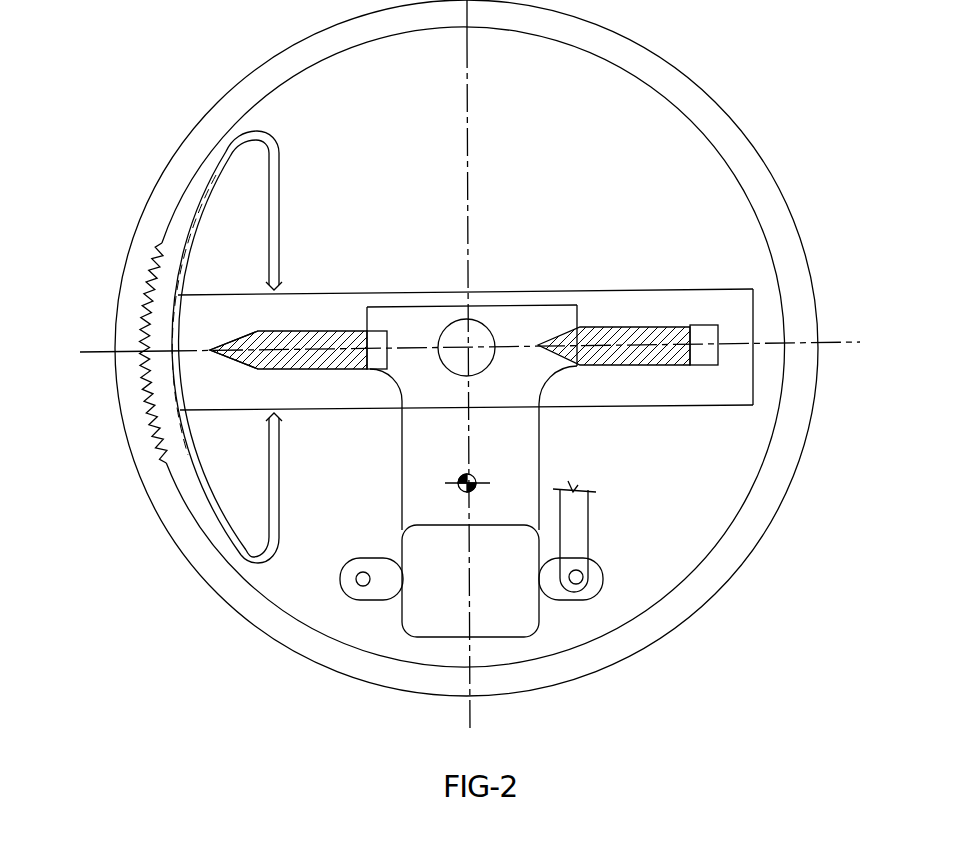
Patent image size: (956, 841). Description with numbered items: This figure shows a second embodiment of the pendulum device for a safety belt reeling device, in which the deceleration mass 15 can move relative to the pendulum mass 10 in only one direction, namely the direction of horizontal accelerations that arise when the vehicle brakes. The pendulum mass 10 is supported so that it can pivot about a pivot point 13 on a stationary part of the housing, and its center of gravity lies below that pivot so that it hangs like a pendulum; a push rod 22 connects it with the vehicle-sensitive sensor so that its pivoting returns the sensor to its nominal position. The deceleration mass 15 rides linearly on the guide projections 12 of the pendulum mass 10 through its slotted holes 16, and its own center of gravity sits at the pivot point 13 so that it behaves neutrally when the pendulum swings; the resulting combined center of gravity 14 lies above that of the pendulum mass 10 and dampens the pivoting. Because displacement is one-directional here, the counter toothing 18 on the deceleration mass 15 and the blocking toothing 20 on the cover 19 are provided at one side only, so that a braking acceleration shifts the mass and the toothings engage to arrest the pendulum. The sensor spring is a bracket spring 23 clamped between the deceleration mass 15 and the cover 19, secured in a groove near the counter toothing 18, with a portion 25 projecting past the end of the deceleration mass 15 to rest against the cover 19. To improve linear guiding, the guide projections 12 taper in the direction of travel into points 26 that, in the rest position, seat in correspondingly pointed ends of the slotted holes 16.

The pendulum mass 10 is at (522, 610).
The guide projections 12 is at (673, 352).
The pivot point 13 is at (467, 345).
The combined center of gravity 14 is at (455, 483).
The deceleration mass 15 is at (640, 300).
The slotted holes 16 is at (710, 325).
The counter toothing 18 is at (167, 352).
The cover 19 is at (559, 48).
The blocking toothing 20 is at (152, 262).
The push rod 22 is at (575, 523).
The bracket spring 23 is at (208, 206).
The portion 25 is at (230, 140).
The points 26 is at (233, 365).